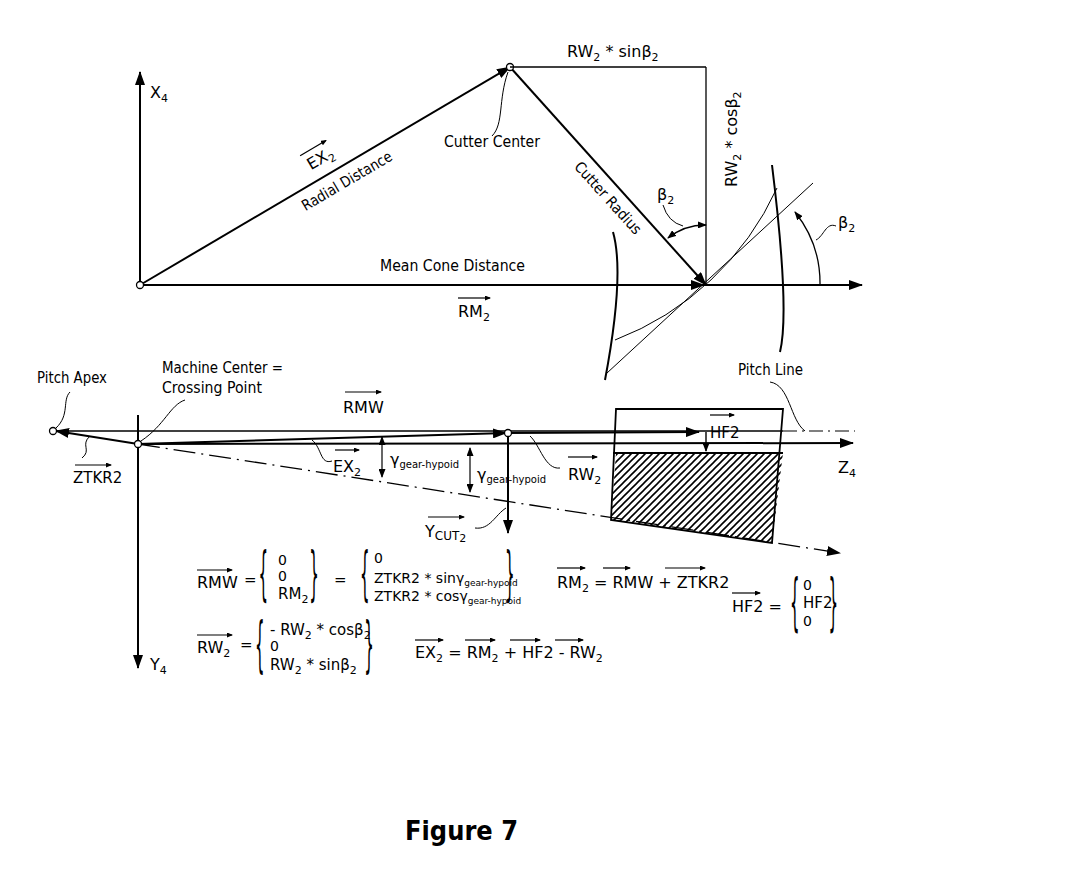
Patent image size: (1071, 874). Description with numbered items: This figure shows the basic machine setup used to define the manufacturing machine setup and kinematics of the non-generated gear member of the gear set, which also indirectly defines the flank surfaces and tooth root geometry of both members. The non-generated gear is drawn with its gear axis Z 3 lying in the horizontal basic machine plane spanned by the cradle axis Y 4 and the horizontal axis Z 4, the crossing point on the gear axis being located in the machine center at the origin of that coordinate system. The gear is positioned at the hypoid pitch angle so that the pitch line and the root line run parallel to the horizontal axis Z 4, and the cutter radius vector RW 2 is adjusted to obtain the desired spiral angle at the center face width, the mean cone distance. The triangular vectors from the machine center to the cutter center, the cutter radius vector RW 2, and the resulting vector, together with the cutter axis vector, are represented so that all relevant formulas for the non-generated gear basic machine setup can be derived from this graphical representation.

The cutter radius vector RW2 2 is at (644, 146).
The Z3 axis 3 is at (501, 503).
The Z4 axis 4 is at (505, 302).